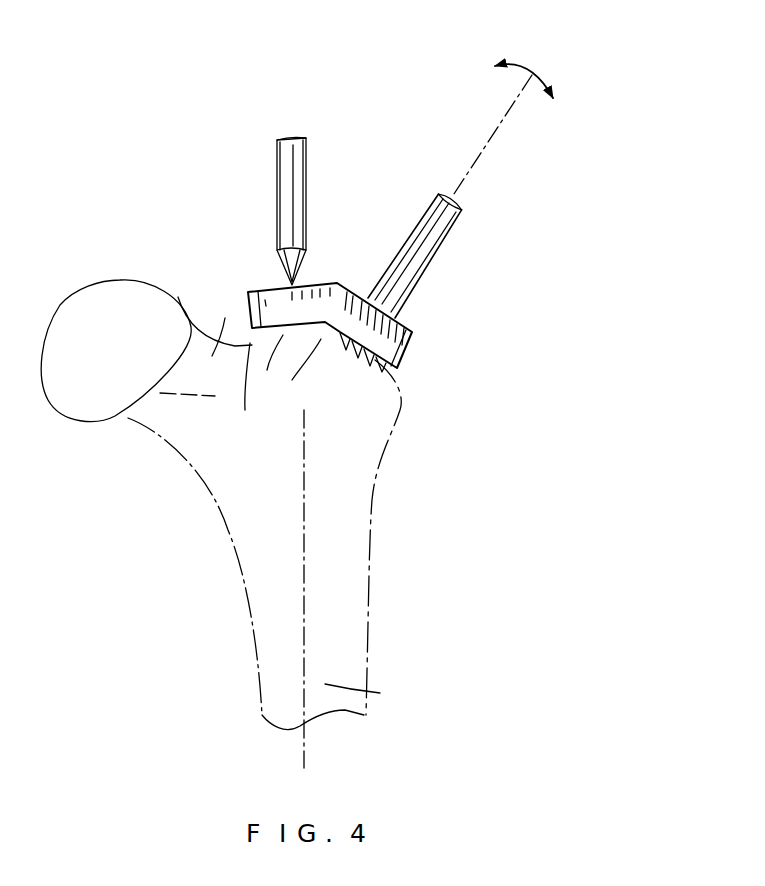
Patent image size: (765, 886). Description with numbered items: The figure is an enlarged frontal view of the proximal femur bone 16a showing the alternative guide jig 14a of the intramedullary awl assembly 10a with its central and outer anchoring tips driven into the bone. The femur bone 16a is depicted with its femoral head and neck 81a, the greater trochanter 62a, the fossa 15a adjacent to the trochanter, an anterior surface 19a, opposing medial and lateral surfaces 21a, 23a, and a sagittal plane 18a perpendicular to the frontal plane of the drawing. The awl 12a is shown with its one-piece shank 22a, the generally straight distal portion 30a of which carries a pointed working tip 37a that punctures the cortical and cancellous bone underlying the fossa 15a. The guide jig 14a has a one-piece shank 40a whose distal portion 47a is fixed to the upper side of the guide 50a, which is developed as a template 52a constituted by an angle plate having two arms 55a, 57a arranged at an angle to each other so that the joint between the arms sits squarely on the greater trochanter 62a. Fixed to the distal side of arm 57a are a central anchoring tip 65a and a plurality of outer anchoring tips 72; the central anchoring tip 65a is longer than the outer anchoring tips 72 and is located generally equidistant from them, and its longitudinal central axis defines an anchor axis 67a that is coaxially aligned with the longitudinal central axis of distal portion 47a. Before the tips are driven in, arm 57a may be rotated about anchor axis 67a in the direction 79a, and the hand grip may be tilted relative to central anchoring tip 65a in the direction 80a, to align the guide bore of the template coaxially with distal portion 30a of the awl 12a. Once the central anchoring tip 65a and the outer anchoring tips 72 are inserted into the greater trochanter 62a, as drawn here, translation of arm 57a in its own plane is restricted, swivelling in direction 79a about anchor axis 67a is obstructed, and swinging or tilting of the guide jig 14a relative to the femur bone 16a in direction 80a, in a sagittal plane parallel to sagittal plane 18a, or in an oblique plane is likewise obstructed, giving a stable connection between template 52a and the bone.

The intramedullary awl assembly 10a is at (374, 140).
The awl 12a is at (274, 145).
The guide jig 14a is at (469, 213).
The fossa 15a is at (313, 361).
The femur bone 16a is at (248, 500).
The sagittal plane 18a is at (306, 738).
The anterior surface 19a is at (382, 693).
The medial surface 21a is at (253, 630).
The shank 22a is at (276, 160).
The lateral surface 23a is at (367, 614).
The distal portion 30a is at (277, 191).
The working tip 37a is at (287, 282).
The shank 40a is at (363, 276).
The distal portion 47a is at (445, 255).
The guide 50a is at (420, 327).
The template 52a is at (343, 272).
The arm 55a is at (247, 312).
The arm 57a is at (418, 360).
The greater trochanter 62a is at (407, 368).
The central anchoring tip 65a is at (351, 352).
The anchor axis 67a is at (486, 150).
The outer anchoring tips 72 is at (342, 362).
The direction 79a is at (410, 311).
The direction 80a is at (548, 72).
The neck 81a is at (237, 335).